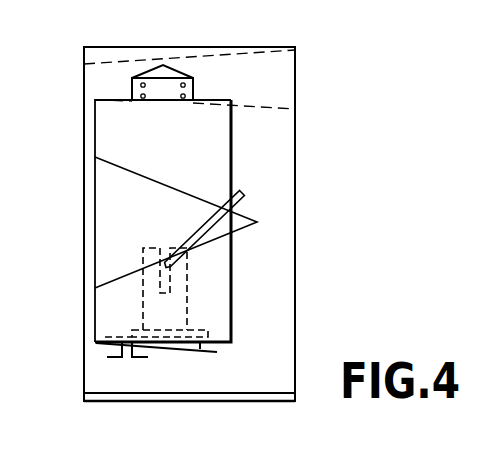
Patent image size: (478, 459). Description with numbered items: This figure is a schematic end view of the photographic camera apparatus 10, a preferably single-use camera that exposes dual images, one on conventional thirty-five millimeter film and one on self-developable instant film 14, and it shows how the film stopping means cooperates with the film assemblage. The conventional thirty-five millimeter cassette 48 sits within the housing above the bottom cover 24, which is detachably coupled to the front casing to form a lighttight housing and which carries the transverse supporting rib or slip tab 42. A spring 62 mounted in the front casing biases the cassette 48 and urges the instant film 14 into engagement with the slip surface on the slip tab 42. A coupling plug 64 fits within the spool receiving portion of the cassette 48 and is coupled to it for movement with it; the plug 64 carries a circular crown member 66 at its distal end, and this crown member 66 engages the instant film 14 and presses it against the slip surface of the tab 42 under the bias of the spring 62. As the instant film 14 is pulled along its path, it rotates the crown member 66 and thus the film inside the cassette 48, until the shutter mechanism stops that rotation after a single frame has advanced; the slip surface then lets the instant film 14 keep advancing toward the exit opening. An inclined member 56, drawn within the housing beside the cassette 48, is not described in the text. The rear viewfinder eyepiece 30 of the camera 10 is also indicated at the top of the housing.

The photographic camera apparatus 10 is at (268, 377).
The instant film 14 is at (191, 351).
The bottom cover 24 is at (190, 394).
The rear viewfinder eyepiece 30 is at (121, 62).
The slip tab 42 is at (124, 343).
The 35 mm cassette 48 is at (108, 133).
The lever arm 56 is at (226, 200).
The spring 62 is at (186, 78).
The coupling plug 64 is at (177, 302).
The circular crown member 66 is at (206, 332).